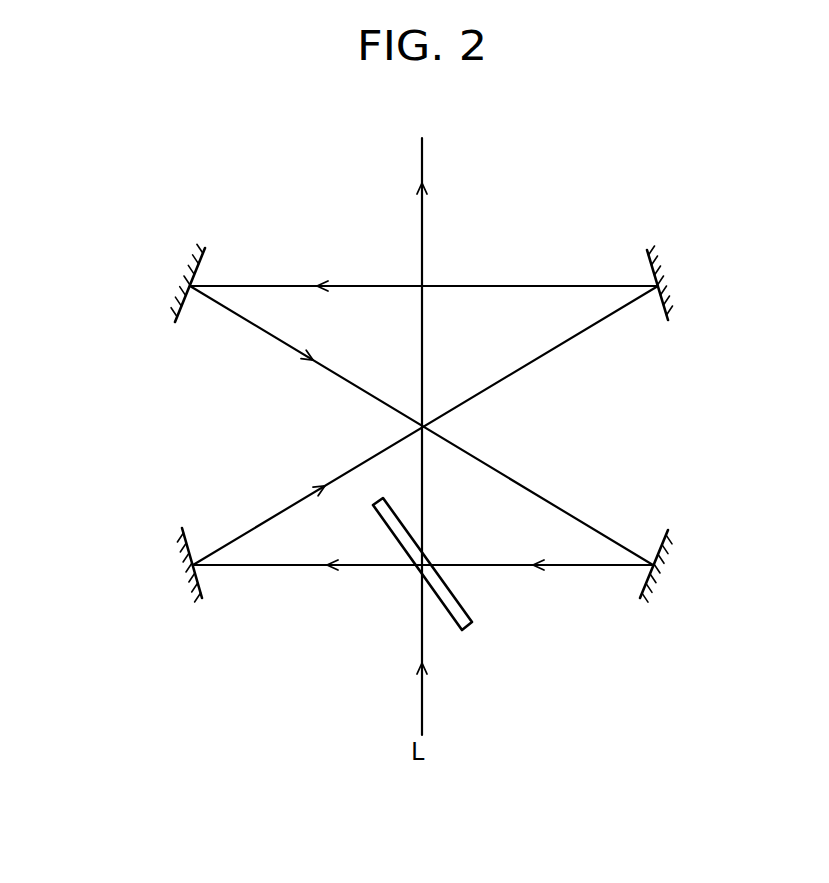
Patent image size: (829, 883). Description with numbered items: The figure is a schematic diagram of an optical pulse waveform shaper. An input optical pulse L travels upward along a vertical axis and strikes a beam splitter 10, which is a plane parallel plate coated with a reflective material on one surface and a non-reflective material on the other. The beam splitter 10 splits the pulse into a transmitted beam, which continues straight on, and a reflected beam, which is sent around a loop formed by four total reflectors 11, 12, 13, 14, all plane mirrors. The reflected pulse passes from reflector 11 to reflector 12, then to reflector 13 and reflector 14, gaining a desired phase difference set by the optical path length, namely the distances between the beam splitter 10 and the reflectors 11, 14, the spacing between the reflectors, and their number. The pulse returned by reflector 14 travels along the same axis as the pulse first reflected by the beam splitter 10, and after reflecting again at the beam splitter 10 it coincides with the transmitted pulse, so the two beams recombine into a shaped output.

The beam splitter 10 is at (450, 585).
The total reflector 11 is at (177, 570).
The total reflector 12 is at (677, 268).
The total reflector 13 is at (172, 278).
The total reflector 14 is at (675, 570).